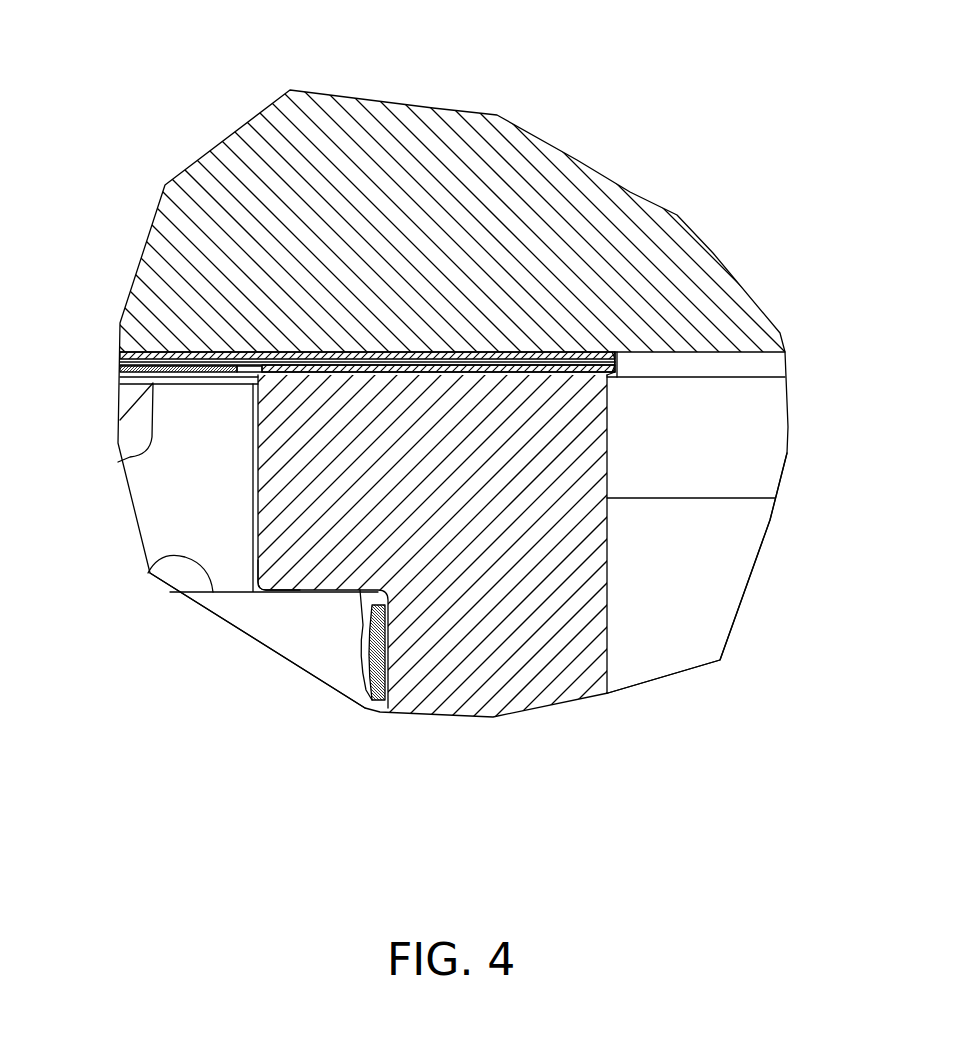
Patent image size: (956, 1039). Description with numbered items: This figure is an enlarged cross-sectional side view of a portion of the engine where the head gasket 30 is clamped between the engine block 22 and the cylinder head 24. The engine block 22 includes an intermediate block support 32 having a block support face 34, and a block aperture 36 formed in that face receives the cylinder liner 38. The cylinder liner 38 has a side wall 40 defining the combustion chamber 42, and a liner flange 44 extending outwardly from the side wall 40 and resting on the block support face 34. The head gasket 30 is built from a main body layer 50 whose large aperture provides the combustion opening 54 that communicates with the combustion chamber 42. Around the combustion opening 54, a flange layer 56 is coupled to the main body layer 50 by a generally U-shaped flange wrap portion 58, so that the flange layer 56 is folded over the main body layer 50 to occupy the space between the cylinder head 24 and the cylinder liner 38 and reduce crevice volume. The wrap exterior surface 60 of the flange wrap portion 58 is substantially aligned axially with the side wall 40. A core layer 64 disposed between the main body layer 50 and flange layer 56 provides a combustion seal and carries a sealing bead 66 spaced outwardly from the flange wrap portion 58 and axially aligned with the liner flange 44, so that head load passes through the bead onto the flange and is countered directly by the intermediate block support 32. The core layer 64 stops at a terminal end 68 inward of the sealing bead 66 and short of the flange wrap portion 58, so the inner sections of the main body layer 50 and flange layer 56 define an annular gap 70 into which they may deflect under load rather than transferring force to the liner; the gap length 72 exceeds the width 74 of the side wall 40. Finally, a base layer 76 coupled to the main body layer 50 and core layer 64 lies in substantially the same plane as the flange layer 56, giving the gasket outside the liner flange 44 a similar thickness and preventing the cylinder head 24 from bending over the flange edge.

The engine block 22 is at (215, 625).
The cylinder head 24 is at (515, 168).
The head gasket 30 is at (118, 362).
The intermediate block support 32 is at (258, 645).
The block support face 34 is at (150, 573).
The block aperture 36 is at (375, 705).
The cylinder liner 38 is at (705, 580).
The side wall 40 is at (555, 645).
The combustion chamber 42 is at (681, 575).
The liner flange 44 is at (292, 570).
The main body layer 50 is at (307, 363).
The combustion opening 54 is at (733, 379).
The flange layer 56 is at (457, 373).
The flange wrap portion 58 is at (620, 368).
The wrap exterior surface 60 is at (615, 375).
The core layer 64 is at (222, 365).
The sealing bead 66 is at (260, 357).
The terminal end 68 is at (358, 367).
The annular gap 70 is at (463, 363).
The gap length 72 is at (607, 392).
The width 74 is at (607, 732).
The base layer 76 is at (118, 462).